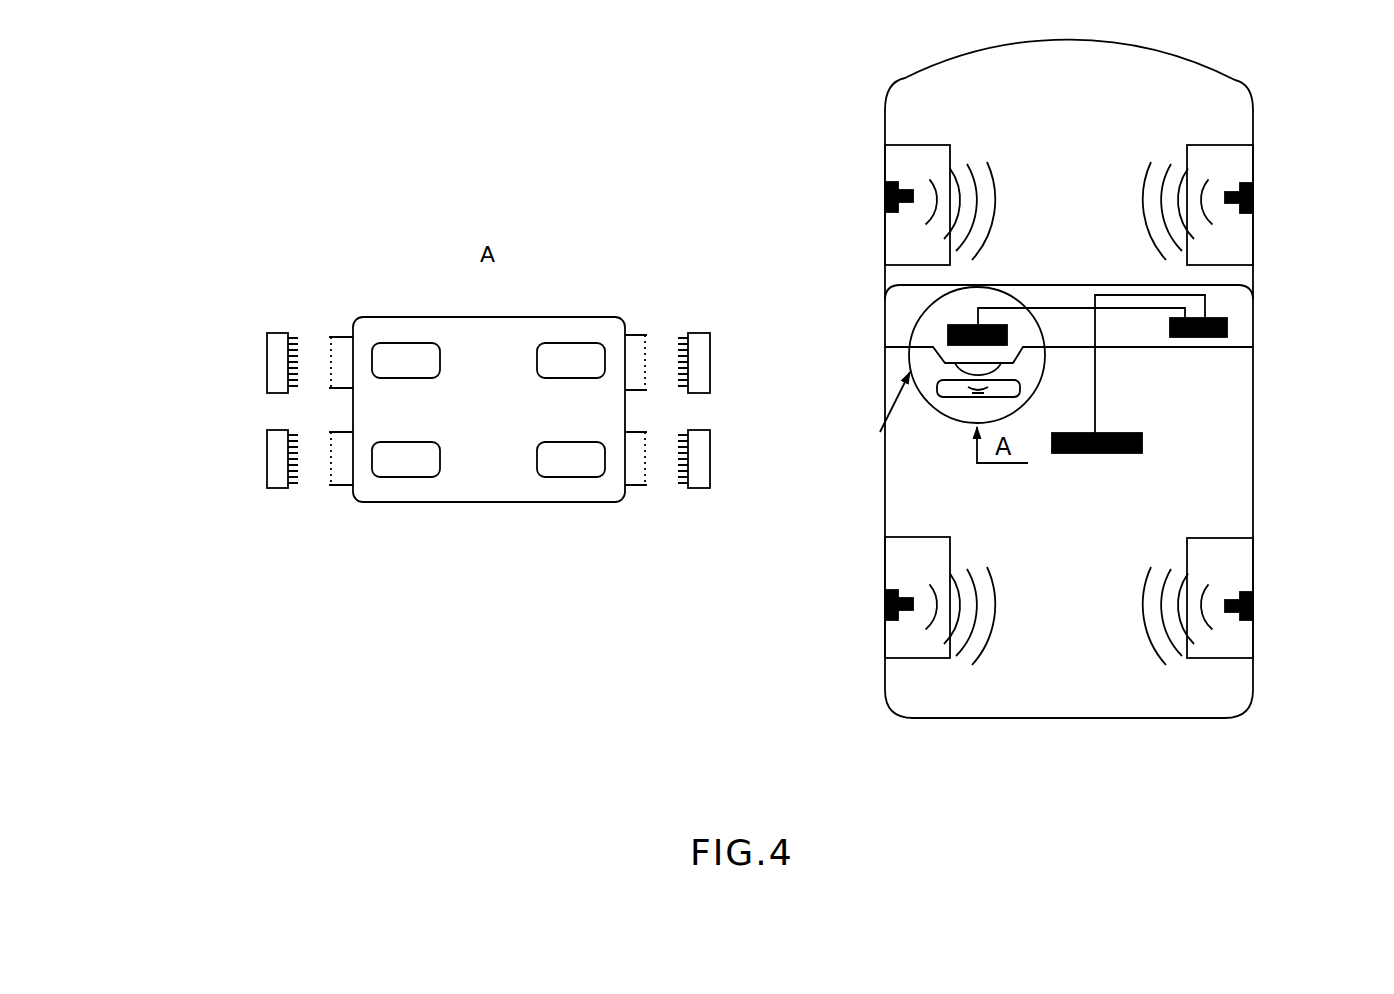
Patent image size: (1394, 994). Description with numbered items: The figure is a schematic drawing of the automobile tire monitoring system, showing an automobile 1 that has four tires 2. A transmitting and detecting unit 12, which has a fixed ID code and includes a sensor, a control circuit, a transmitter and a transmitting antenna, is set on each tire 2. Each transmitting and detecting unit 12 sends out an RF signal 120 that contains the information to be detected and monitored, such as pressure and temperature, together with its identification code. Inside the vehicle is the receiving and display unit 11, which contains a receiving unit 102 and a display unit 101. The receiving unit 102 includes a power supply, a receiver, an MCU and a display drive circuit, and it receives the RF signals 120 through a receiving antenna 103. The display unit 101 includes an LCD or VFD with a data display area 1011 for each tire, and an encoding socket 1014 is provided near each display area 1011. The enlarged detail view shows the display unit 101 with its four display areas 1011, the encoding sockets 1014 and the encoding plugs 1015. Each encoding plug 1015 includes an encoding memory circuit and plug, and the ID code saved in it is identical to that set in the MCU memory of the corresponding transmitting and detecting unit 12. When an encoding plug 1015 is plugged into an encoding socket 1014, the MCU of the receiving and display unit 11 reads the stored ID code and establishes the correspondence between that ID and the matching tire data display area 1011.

The automobile 1 is at (1025, 693).
The tire 2 is at (915, 158).
The transmitting and detecting unit 12 is at (883, 193).
The RF signal 120 is at (1145, 205).
The receiving and display unit 11 is at (1213, 438).
The receiving unit 102 is at (1230, 323).
The receiving antenna 103 is at (1143, 445).
The display unit 101 is at (495, 472).
The display area 1011 is at (397, 348).
The encoding socket 1014 is at (340, 348).
The encoding plug 1015 is at (277, 353).